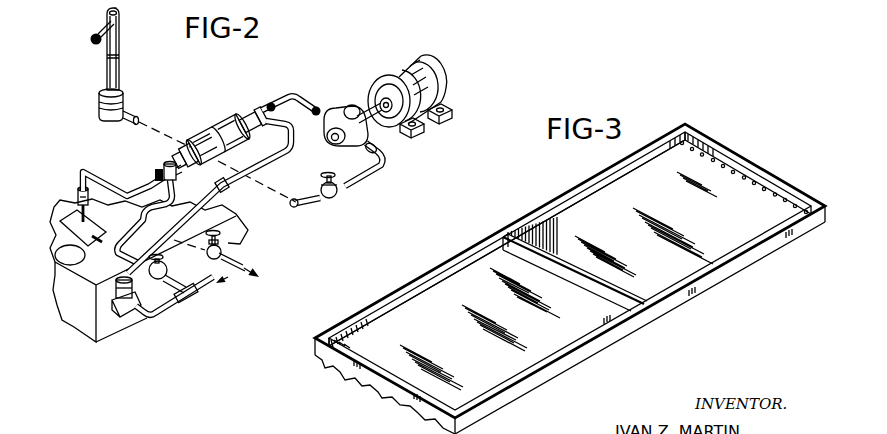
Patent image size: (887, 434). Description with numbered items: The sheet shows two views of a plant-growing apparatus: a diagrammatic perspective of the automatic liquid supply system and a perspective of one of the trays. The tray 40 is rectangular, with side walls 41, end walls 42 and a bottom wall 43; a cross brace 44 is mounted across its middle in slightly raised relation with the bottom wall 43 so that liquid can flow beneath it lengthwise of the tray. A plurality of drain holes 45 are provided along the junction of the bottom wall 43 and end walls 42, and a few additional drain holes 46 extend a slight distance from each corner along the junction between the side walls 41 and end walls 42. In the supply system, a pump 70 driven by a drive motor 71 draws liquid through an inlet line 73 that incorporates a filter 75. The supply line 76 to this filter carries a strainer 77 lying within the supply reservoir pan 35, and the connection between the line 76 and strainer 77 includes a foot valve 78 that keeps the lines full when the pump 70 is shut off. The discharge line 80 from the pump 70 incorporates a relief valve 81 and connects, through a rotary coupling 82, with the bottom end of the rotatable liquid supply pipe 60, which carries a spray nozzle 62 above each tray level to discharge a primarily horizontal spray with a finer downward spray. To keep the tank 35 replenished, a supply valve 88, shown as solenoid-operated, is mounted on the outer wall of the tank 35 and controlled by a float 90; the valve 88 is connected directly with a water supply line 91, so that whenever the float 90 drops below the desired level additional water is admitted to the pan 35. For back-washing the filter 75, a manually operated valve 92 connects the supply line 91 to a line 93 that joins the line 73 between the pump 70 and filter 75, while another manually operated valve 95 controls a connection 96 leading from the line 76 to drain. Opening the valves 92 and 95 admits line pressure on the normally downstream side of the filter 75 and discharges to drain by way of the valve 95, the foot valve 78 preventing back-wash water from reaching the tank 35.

In FIG. 2, the supply reservoir pan 35 is at (78, 318).
In FIG. 3, the tray 40 is at (534, 197).
In FIG. 3, the side walls 41 is at (465, 266).
In FIG. 3, the end walls 42 is at (337, 358).
In FIG. 3, the bottom wall 43 is at (580, 318).
In FIG. 3, the cross brace 44 is at (607, 293).
In FIG. 3, the drain holes 45 is at (760, 188).
In FIG. 3, the additional drain holes 46 is at (336, 345).
In FIG. 2, the liquid supply pipe 60 is at (120, 65).
In FIG. 2, the spray nozzle 62 is at (103, 30).
In FIG. 2, the pump 70 is at (343, 112).
In FIG. 2, the drive motor 71 is at (418, 70).
In FIG. 2, the inlet line 73 is at (292, 96).
In FIG. 2, the filter 75 is at (200, 145).
In FIG. 2, the supply line 76 is at (100, 175).
In FIG. 2, the strainer 77 is at (96, 229).
In FIG. 2, the foot valve 78 is at (78, 190).
In FIG. 2, the discharge line 80 is at (139, 120).
In FIG. 2, the relief valve 81 is at (338, 198).
In FIG. 2, the rotary coupling 82 is at (98, 109).
In FIG. 2, the supply valve 88 is at (117, 318).
In FIG. 2, the float 90 is at (73, 267).
In FIG. 2, the water supply line 91 is at (206, 289).
In FIG. 2, the manually operated valve 92 is at (158, 286).
In FIG. 2, the line 93 is at (230, 185).
In FIG. 2, the manually operated valve 95 is at (247, 250).
In FIG. 2, the connection 96 is at (146, 205).